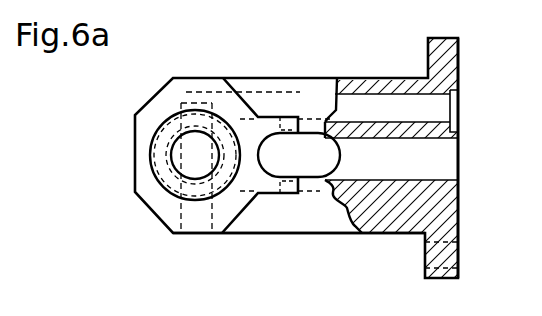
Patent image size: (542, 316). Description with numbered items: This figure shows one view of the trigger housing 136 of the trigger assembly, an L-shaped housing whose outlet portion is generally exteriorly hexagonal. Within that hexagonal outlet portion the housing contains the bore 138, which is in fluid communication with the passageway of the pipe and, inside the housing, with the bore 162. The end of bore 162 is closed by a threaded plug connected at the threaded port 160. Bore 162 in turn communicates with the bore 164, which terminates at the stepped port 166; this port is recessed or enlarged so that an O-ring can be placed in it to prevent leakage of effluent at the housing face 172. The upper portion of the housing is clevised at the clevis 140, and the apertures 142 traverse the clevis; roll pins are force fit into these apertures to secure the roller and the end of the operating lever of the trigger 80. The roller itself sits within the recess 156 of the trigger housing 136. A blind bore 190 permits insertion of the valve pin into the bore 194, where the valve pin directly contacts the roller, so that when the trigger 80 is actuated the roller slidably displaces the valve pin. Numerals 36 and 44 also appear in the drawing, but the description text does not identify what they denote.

The body 36 is at (178, 178).
The bore 44 is at (152, 163).
The trigger 80 is at (346, 312).
The trigger housing 136 is at (383, 80).
The bore 138 is at (208, 161).
The clevis 140 is at (272, 117).
The apertures 142 is at (283, 120).
The recess 156 is at (310, 162).
The threaded port 160 is at (193, 233).
The bore 162 is at (202, 233).
The bore 164 is at (385, 117).
The stepped port 166 is at (455, 110).
The housing face 172 is at (458, 223).
The blind bore 190 is at (460, 167).
The bore 194 is at (420, 164).